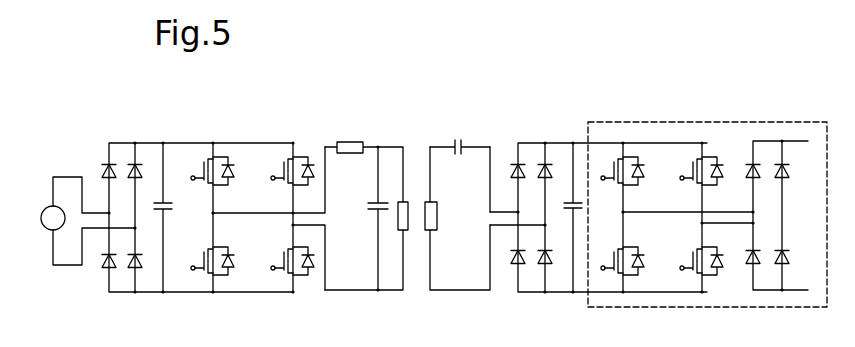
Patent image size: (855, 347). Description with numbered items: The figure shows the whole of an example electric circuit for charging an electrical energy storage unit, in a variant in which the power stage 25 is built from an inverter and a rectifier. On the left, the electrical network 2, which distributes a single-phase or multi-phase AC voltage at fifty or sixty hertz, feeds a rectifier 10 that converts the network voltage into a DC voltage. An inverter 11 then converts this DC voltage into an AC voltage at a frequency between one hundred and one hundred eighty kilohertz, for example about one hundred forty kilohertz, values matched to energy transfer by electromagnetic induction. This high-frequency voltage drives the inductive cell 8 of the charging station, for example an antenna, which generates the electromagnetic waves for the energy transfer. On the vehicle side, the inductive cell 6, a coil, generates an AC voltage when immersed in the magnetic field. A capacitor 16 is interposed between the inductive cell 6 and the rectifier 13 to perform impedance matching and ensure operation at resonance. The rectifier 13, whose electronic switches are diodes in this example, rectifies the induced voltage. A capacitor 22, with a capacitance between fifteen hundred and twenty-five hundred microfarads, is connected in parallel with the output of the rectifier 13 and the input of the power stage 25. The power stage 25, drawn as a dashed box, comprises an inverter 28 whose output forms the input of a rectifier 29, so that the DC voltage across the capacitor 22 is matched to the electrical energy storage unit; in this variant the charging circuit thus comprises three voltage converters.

The electrical network 2 is at (48, 207).
The rectifier 10 is at (109, 131).
The inverter 11 is at (295, 129).
The inductive cell 8 is at (396, 215).
The capacitor 16 is at (454, 141).
The inductive cell 6 is at (439, 215).
The rectifier 13 is at (518, 129).
The capacitor 22 is at (575, 195).
The power stage 25 is at (728, 307).
The inverter 28 is at (707, 132).
The rectifier 29 is at (808, 132).